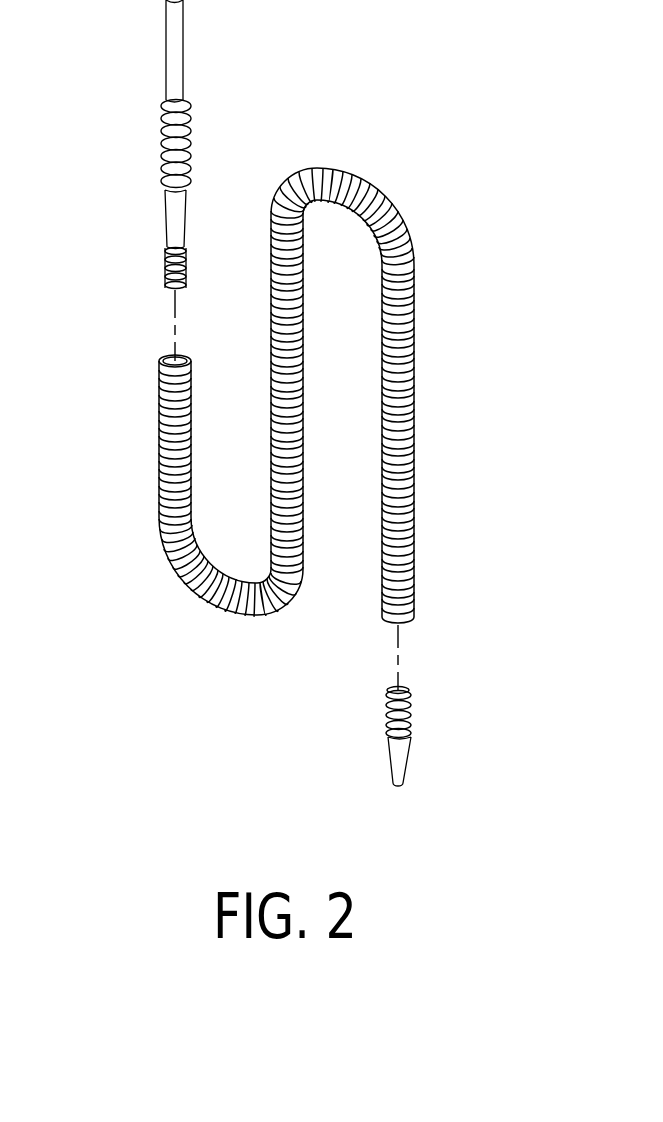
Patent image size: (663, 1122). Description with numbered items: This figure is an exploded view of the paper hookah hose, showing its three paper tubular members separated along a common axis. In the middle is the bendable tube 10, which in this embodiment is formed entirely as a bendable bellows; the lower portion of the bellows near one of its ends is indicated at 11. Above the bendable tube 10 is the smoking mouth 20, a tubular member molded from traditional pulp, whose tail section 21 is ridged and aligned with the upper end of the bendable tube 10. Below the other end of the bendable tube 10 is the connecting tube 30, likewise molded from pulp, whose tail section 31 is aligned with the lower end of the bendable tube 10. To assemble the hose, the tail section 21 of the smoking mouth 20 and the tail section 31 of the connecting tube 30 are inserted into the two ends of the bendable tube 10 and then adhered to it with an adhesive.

The bendable tube 10 is at (290, 369).
The end section of coiled hose 11 is at (192, 577).
The smoking mouth 20 is at (163, 63).
The tail section of the smoking mouth 21 is at (167, 278).
The connecting tube 30 is at (412, 758).
The tail section of the connecting tube 31 is at (410, 710).